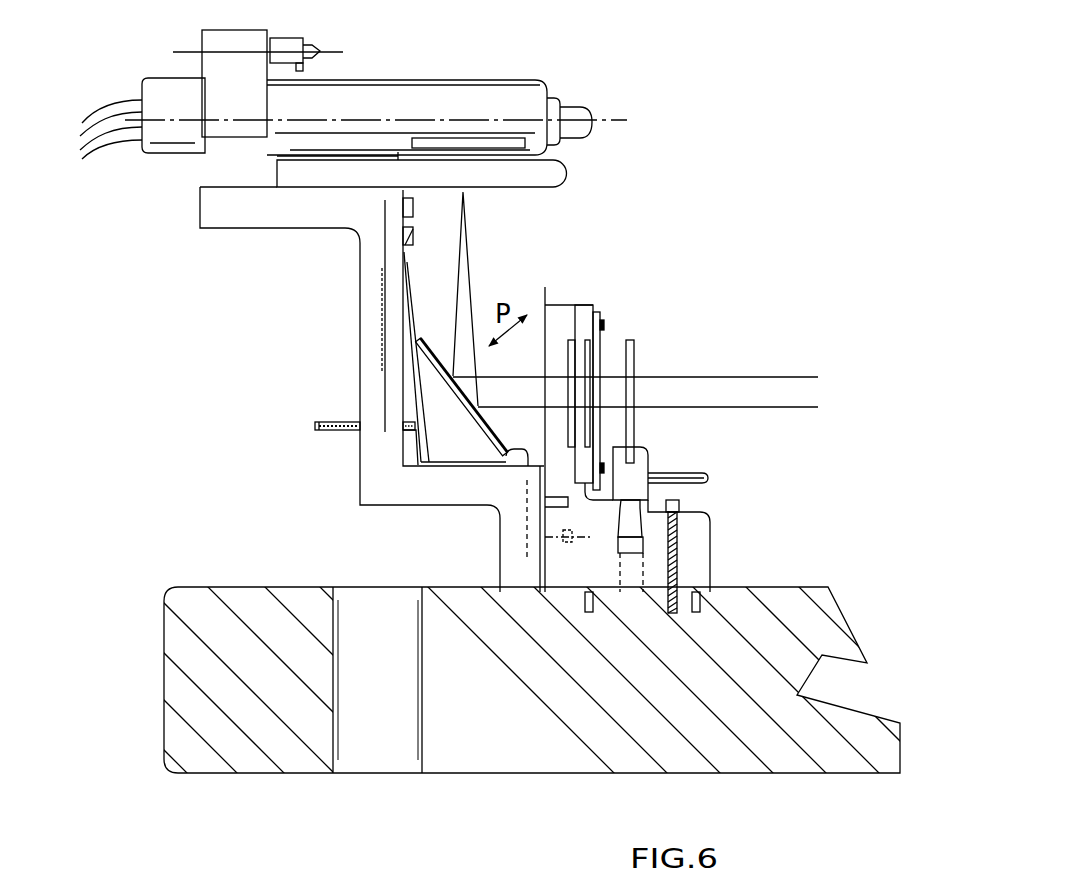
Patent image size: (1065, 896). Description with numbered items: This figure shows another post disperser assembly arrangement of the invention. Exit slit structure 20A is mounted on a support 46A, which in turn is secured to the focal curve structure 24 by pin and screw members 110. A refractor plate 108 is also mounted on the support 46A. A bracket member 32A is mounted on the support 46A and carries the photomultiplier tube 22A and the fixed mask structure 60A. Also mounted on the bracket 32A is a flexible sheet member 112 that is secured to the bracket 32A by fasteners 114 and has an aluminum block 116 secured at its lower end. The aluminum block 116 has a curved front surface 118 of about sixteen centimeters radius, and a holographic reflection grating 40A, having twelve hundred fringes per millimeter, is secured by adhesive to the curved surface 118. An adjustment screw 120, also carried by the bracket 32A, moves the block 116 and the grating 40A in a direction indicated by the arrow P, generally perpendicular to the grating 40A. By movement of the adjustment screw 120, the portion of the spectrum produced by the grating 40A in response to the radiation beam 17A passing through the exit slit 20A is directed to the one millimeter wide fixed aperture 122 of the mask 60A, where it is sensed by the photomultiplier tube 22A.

The photomultiplier tube 22A is at (446, 82).
The fixed mask structure 60A is at (552, 190).
The bracket member 32A is at (360, 362).
The fasteners 114 is at (410, 240).
The flexible sheet member 112 is at (408, 322).
The aluminum block 116 is at (450, 435).
The adjustment screw 120 is at (338, 419).
The holographic reflection grating 40A is at (422, 333).
The curved front surface 118 is at (525, 467).
The fixed aperture 122 is at (470, 191).
The radiation beam 17A is at (702, 388).
The exit slit structure 20A is at (584, 303).
The refractor plate 108 is at (633, 342).
The support 46A is at (707, 504).
The pin and screw members 110 is at (677, 568).
The focal curve structure 24 is at (237, 600).